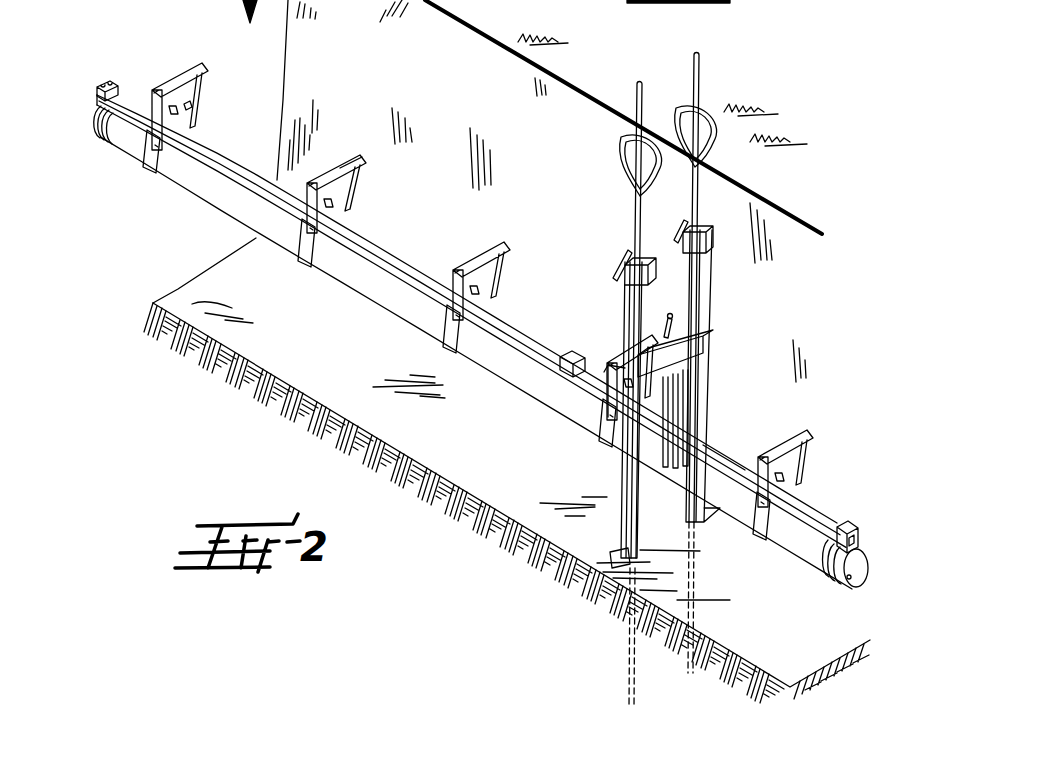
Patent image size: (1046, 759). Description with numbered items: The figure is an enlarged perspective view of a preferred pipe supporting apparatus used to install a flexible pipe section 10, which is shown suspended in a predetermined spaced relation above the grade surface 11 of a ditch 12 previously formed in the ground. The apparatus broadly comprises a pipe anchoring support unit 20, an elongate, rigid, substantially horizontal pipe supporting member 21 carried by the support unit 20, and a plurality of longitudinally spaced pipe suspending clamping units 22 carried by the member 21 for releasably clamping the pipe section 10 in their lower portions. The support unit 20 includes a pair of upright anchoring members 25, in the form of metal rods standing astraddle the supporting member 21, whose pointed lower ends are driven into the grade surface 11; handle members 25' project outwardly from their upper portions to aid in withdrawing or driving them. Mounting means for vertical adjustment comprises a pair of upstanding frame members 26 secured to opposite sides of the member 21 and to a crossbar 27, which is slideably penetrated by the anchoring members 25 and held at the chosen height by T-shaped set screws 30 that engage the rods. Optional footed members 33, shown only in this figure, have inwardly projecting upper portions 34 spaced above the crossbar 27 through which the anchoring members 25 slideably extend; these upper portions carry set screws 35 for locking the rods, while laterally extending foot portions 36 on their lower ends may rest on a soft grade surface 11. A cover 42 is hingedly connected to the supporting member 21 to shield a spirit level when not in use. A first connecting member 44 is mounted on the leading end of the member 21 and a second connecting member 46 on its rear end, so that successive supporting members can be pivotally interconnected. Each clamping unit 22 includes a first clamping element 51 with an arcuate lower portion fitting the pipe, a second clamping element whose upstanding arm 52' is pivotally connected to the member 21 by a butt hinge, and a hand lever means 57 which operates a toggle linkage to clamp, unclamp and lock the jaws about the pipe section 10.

The flexible pipe section 10 is at (412, 320).
The grade surface 11 is at (316, 348).
The ditch 12 is at (474, 30).
The pipe anchoring support unit 20 is at (671, 380).
The pipe supporting member 21 is at (722, 458).
The pipe suspending clamping units 22 is at (167, 72).
The anchoring members 25 is at (664, 380).
The handle members 25' is at (673, 151).
The upstanding frame members 26 is at (662, 401).
The crossbar 27 is at (718, 356).
The set screws 30 is at (616, 348).
The footed members 33 is at (708, 293).
The inwardly projecting upper portions 34 is at (650, 276).
The set screws 35 is at (622, 252).
The foot portions 36 is at (607, 553).
The cover 42 is at (571, 352).
The first connecting member 44 is at (843, 527).
The second connecting member 46 is at (112, 92).
The first clamping element 51 is at (150, 170).
The upstanding arm 52' is at (212, 100).
The hand lever means 57 is at (360, 161).